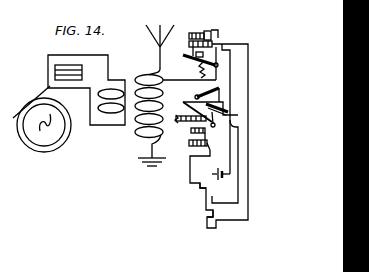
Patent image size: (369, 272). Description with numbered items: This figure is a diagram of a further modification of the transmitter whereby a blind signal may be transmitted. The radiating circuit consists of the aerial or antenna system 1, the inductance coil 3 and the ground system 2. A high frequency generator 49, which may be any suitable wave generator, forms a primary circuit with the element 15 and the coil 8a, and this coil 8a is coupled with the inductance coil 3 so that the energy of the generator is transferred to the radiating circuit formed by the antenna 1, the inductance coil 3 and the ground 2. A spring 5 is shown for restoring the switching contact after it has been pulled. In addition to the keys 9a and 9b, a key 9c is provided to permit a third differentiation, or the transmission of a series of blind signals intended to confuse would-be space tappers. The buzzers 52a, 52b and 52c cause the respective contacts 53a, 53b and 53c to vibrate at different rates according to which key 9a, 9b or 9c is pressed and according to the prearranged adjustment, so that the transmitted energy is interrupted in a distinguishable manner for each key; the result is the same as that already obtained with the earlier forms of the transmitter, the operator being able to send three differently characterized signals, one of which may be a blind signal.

The aerial or antenna system 1 is at (162, 45).
The ground system 2 is at (152, 169).
The inductance coil 3 is at (149, 112).
The spring 5 is at (188, 92).
The inductance coil 8a is at (111, 116).
The key 9a is at (221, 185).
The key 9b is at (220, 224).
The key 9c is at (195, 185).
The primary circuit element 15 is at (69, 90).
The high frequency generator 49 is at (44, 134).
The buzzer 52a is at (221, 104).
The buzzer 52b is at (219, 39).
The buzzer 52c is at (195, 148).
The vibrating contact 53a is at (196, 96).
The vibrating contact 53b is at (198, 57).
The vibrating contact 53c is at (192, 120).